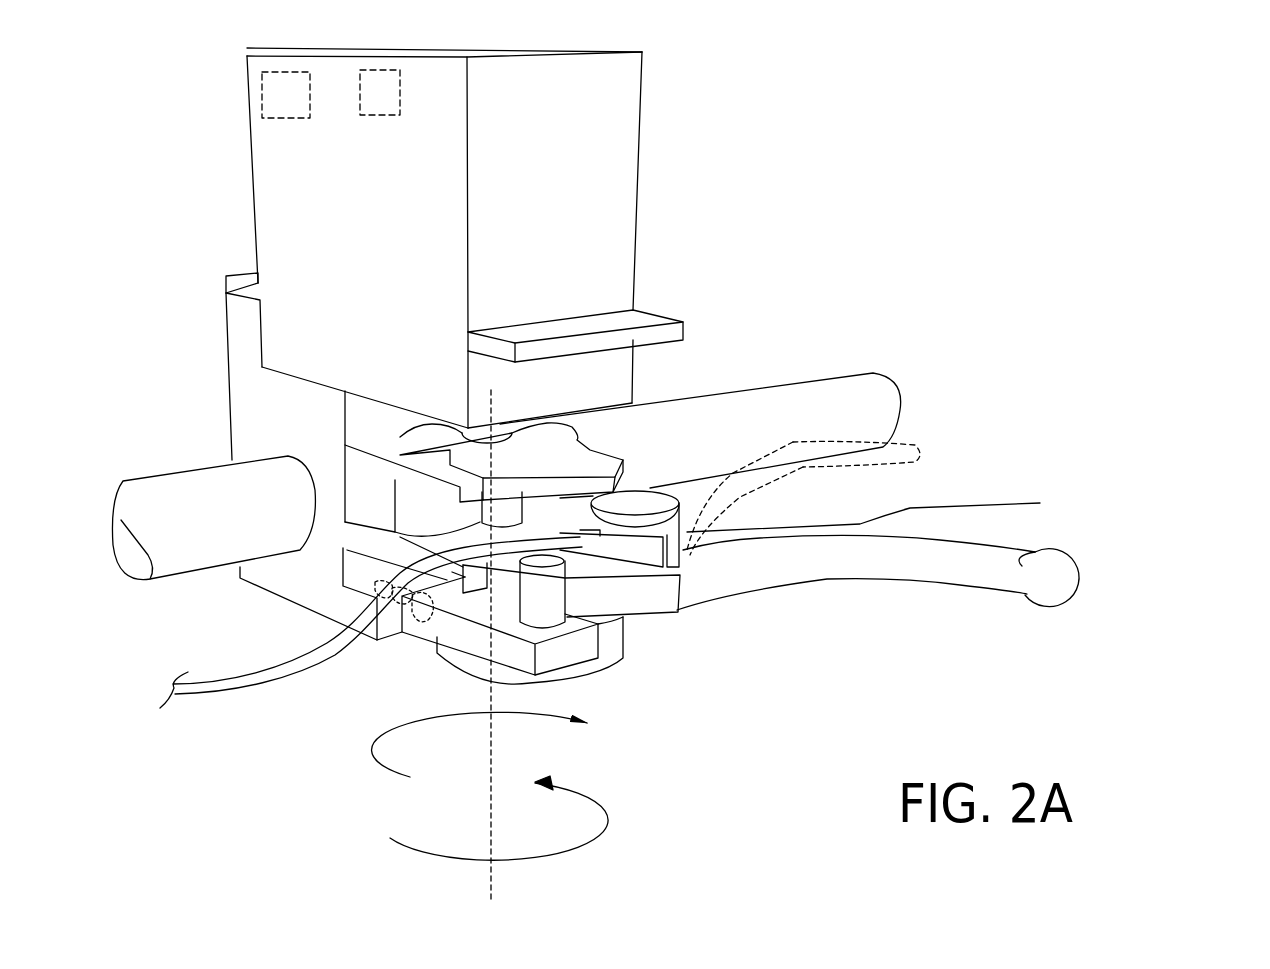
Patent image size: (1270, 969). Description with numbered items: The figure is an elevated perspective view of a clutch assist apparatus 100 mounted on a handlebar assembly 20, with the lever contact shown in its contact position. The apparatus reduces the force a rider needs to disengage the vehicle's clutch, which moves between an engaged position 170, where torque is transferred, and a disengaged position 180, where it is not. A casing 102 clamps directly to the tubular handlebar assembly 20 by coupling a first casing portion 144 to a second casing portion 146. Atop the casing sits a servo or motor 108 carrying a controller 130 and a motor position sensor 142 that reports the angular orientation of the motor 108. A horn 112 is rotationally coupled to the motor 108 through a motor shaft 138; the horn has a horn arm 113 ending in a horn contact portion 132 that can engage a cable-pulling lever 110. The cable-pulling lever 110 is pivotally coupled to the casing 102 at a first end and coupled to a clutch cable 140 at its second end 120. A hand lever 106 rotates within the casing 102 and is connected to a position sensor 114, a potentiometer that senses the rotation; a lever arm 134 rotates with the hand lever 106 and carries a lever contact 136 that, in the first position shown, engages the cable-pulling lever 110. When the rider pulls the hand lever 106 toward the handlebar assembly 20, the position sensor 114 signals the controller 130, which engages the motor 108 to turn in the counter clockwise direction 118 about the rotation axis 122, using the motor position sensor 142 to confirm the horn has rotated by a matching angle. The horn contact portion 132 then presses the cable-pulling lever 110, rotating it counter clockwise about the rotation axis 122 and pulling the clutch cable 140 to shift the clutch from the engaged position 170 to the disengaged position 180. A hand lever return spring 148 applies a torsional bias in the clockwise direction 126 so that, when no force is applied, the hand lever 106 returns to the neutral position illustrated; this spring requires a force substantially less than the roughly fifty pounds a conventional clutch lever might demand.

The clutch assist apparatus 100 is at (912, 182).
The motor 108 is at (600, 186).
The controller 130 is at (262, 98).
The motor position sensor 142 is at (382, 117).
The first casing portion 144 is at (232, 318).
The casing 102 is at (232, 403).
The second casing portion 146 is at (293, 592).
The horn arm 113 is at (448, 468).
The motor shaft 138 is at (462, 432).
The horn 112 is at (547, 450).
The horn contact portion 132 is at (488, 510).
The handlebar assembly 20 is at (823, 387).
The disengaged position 180 is at (920, 438).
The cable-pulling lever 110 is at (678, 517).
The second end 120 is at (824, 529).
The hand lever 106 is at (993, 578).
The engaged position 170 is at (1089, 597).
The lever contact 136 is at (556, 598).
The position sensor 114 is at (612, 648).
The lever arm 134 is at (572, 660).
The hand lever return spring 148 is at (388, 638).
The clutch cable 140 is at (243, 698).
The rotation axis 122 is at (492, 871).
The clockwise direction 126 is at (380, 762).
The counter clockwise direction 118 is at (612, 818).